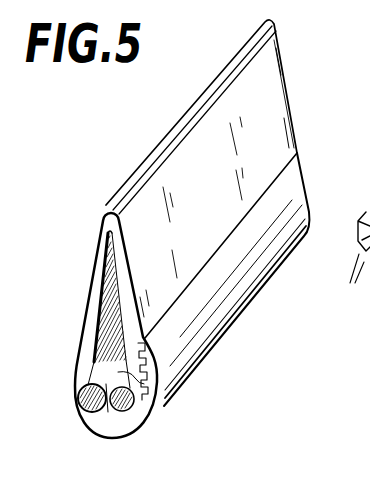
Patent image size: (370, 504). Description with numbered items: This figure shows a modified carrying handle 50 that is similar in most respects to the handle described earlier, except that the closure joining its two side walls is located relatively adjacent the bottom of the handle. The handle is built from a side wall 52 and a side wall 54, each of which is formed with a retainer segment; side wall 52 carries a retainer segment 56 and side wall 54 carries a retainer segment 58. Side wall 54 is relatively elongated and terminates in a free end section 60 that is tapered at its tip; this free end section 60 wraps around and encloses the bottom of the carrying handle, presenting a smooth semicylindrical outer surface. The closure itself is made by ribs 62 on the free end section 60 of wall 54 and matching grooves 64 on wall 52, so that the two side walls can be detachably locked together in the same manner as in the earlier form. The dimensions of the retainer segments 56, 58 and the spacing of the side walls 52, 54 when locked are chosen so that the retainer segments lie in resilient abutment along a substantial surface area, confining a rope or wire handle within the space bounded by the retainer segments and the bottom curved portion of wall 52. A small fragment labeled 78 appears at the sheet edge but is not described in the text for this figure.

The carrying handle 50 is at (297, 108).
The side wall 52 is at (277, 72).
The side wall 54 is at (82, 340).
The retainer segment 56 is at (124, 402).
The retainer segment 58 is at (86, 403).
The free end section 60 is at (160, 402).
The ribs 62 is at (147, 380).
The grooves 64 is at (182, 385).
The fastener fragment 78 is at (354, 260).